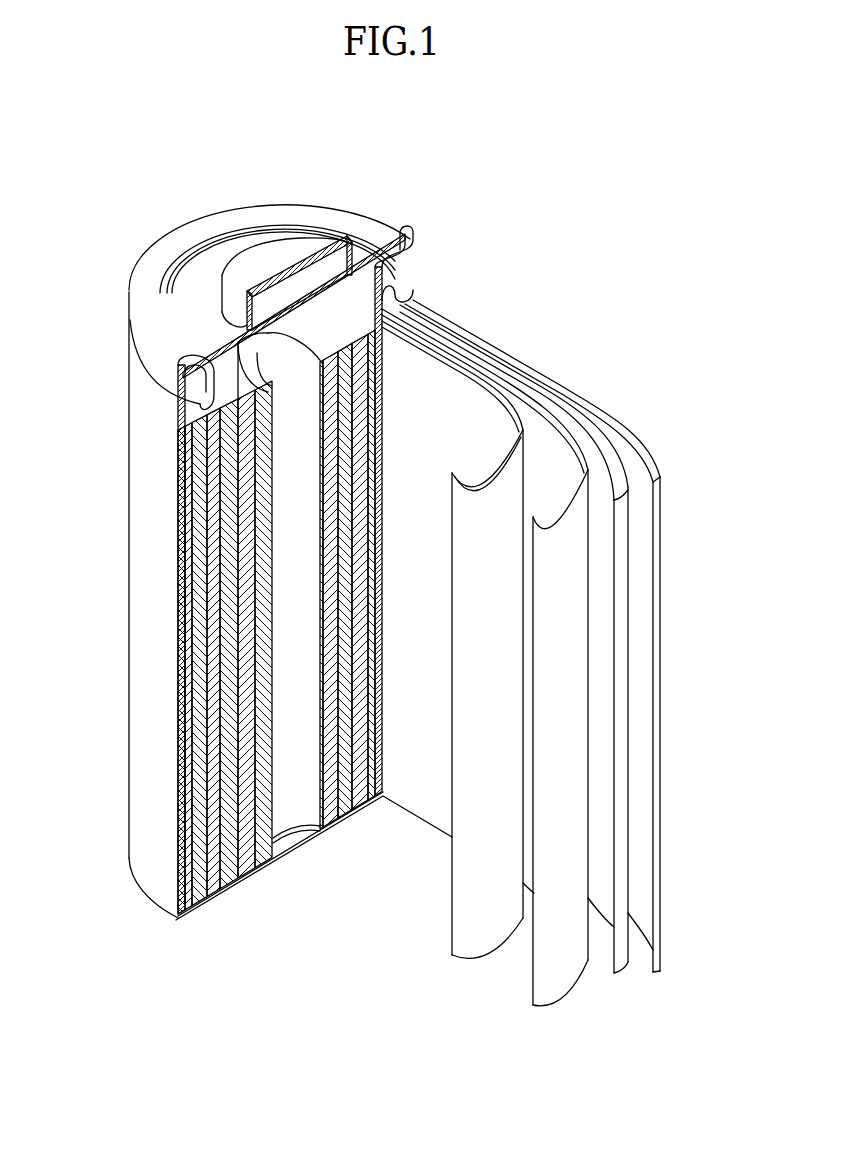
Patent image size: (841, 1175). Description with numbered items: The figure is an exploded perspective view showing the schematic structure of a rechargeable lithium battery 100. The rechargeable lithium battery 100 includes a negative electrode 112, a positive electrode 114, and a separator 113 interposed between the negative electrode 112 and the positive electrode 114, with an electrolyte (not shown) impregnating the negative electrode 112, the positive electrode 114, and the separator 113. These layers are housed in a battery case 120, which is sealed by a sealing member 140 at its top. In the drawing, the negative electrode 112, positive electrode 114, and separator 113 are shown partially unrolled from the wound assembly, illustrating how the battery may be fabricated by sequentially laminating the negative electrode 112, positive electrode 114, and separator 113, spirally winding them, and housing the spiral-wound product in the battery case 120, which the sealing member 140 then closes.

The rechargeable lithium battery 100 is at (470, 183).
The negative electrode 112 is at (658, 477).
The separator 113 is at (482, 380).
The positive electrode 114 is at (557, 427).
The battery case 120 is at (142, 563).
The sealing member 140 is at (242, 257).